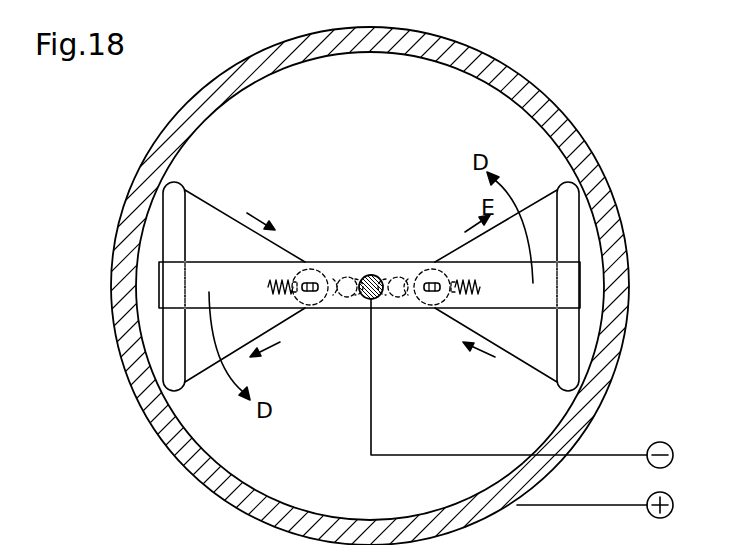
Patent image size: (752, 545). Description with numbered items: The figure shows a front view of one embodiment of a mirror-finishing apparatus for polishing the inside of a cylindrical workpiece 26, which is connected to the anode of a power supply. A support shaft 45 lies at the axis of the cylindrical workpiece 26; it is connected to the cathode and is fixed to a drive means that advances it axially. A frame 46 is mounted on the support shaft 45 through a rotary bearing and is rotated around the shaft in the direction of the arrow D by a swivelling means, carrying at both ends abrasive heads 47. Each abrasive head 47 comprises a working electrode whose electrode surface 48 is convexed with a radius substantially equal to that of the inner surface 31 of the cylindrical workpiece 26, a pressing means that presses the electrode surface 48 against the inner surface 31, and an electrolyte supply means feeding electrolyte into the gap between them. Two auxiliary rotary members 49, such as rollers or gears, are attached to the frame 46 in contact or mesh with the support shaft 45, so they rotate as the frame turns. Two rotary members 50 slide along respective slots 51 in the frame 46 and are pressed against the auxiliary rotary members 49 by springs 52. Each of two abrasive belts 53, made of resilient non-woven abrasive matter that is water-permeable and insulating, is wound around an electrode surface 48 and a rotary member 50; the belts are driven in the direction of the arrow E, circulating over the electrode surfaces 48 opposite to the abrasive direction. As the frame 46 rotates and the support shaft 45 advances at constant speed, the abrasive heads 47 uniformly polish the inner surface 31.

The cylindrical workpiece 26 is at (541, 91).
The inner surface 31 is at (331, 516).
The support shaft 45 is at (371, 275).
The frame 46 is at (227, 270).
The abrasive head 47 is at (163, 212).
The electrode surface 48 is at (127, 303).
The auxiliary rotary member 49 is at (399, 277).
The rotary member 50 is at (309, 268).
The slot 51 is at (433, 281).
The spring 52 is at (266, 290).
The abrasive belt 53 is at (193, 383).